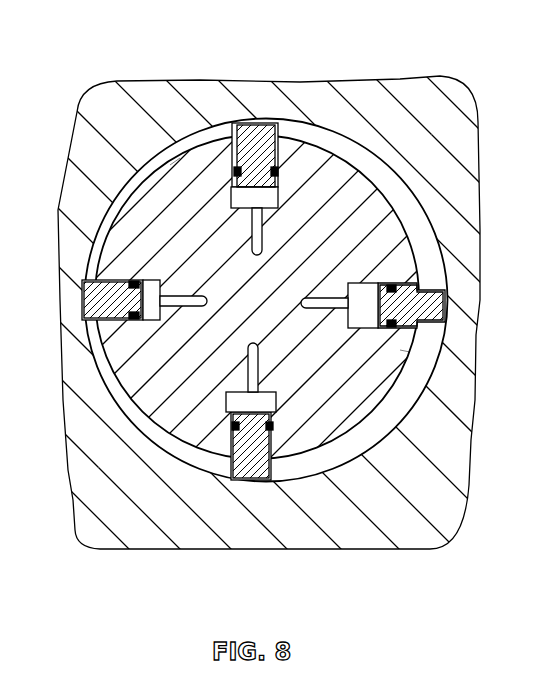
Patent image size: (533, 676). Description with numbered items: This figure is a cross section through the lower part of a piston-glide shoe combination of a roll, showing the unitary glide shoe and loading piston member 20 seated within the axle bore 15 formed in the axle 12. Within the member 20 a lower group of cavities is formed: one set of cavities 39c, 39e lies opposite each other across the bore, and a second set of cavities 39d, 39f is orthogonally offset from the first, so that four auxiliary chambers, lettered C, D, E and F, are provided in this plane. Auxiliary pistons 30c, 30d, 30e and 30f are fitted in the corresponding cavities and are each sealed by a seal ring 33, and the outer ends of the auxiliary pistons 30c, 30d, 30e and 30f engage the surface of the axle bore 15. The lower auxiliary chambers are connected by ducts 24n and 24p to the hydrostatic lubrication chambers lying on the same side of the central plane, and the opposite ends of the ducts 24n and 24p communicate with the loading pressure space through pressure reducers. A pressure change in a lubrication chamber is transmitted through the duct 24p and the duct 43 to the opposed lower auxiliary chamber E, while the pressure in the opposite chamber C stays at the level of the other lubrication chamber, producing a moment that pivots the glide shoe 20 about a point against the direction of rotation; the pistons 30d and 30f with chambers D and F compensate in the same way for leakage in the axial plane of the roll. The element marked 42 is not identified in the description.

The axle 12 is at (105, 500).
The axle bore 15 is at (400, 395).
The glide shoe 20 is at (378, 370).
The duct 24n is at (178, 160).
The duct 24p is at (378, 348).
The auxiliary piston 30c is at (90, 305).
The auxiliary piston 30d is at (274, 122).
The auxiliary piston 30e is at (433, 306).
The auxiliary piston 30f is at (272, 478).
The seal ring 33 is at (280, 170).
The cavity 39c is at (130, 318).
The cavity 39d is at (236, 127).
The cavity 39e is at (380, 283).
The cavity 39f is at (232, 412).
The piston 42 is at (256, 128).
The duct 43 is at (186, 306).